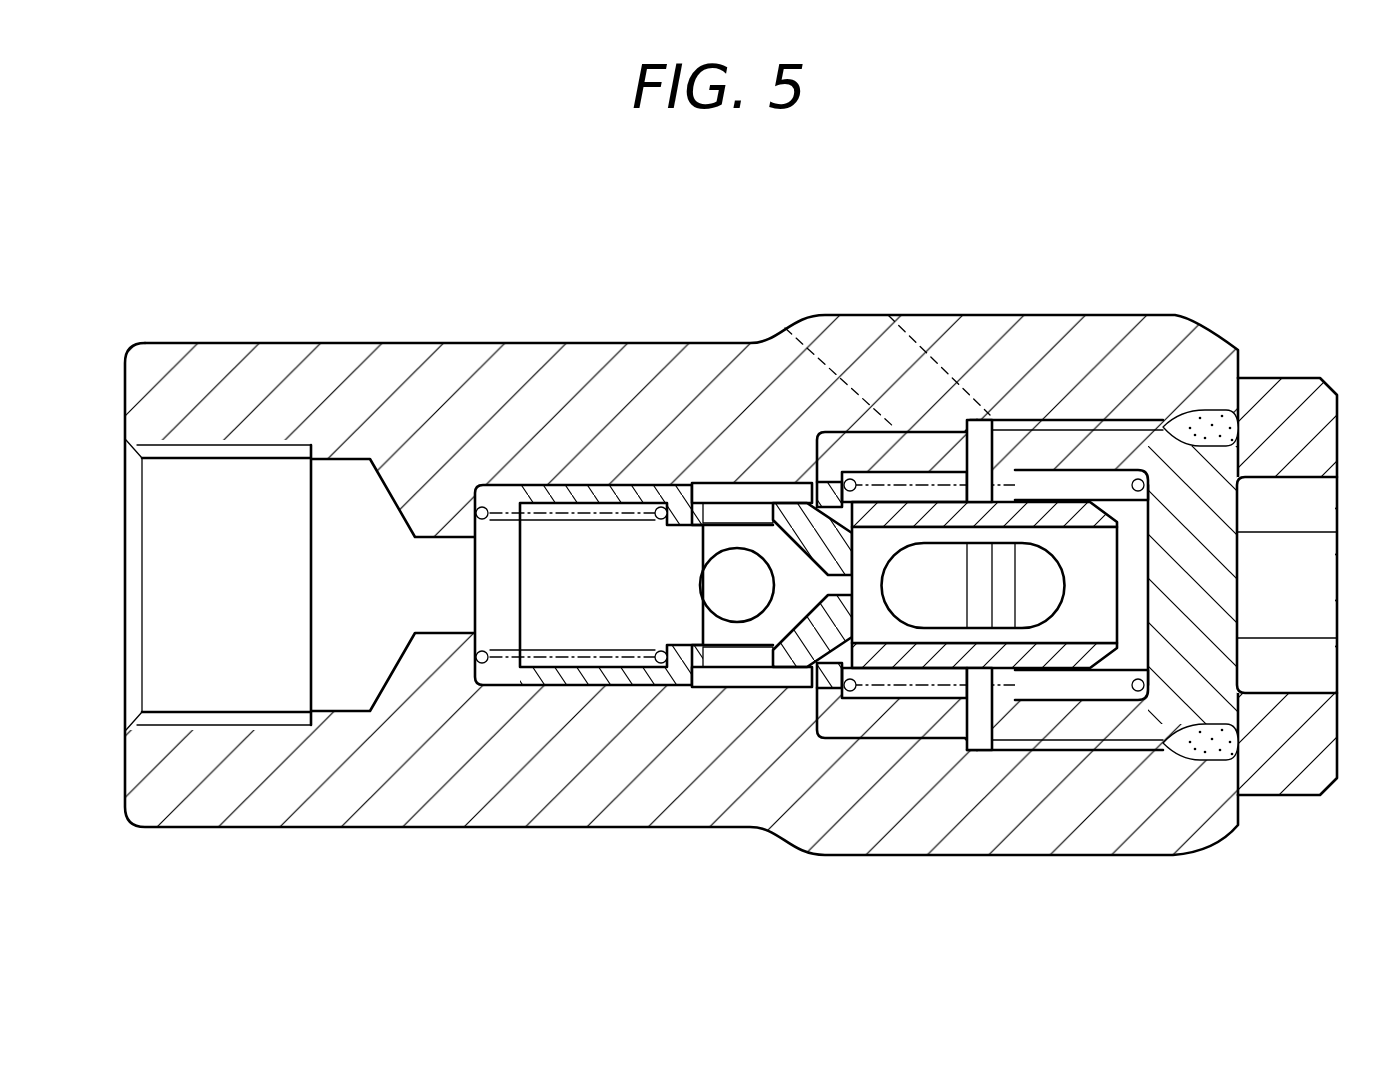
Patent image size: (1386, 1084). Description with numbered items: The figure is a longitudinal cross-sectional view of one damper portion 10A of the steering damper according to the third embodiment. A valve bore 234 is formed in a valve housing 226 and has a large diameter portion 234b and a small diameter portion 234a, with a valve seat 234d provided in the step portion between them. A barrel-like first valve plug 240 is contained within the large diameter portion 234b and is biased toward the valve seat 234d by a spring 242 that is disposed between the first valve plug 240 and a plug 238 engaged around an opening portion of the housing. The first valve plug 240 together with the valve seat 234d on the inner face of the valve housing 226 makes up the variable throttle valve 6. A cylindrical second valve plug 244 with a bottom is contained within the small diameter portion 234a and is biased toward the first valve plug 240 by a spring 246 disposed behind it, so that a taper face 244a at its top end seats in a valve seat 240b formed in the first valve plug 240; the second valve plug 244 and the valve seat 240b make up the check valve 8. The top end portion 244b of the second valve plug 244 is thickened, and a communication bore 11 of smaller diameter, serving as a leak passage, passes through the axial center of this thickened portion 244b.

The damper portion 10A is at (760, 199).
The variable throttle valve 6 is at (800, 676).
The check valve 8 is at (807, 713).
The communication bore (leak passage) 11 is at (760, 597).
The valve housing 226 is at (1140, 318).
The valve bore 234 is at (859, 727).
The small diameter portion 234a is at (575, 528).
The large diameter portion 234b is at (858, 448).
The valve seat 234d is at (832, 740).
The plug 238 is at (1295, 750).
The first valve plug 240 is at (993, 713).
The valve seat 240b is at (762, 530).
The spring 242 is at (1133, 700).
The second valve plug 244 is at (635, 678).
The taper face 244a is at (915, 440).
The top end portion 244b is at (943, 665).
The spring 246 is at (482, 662).